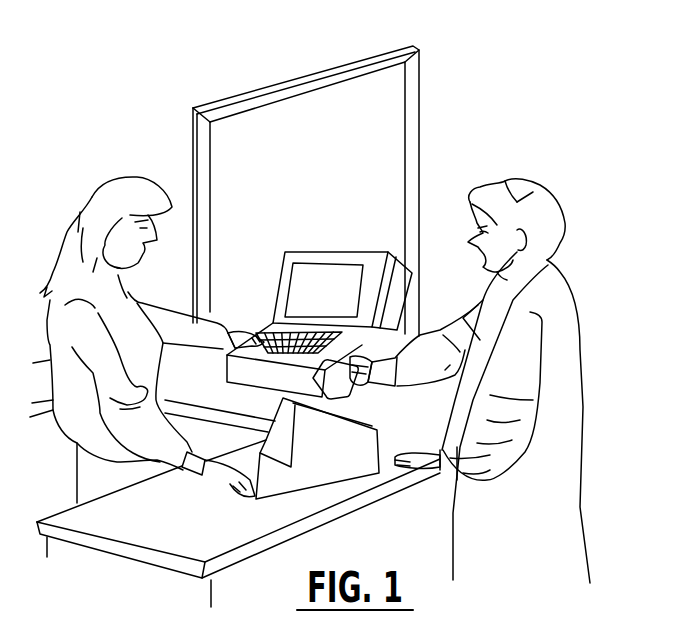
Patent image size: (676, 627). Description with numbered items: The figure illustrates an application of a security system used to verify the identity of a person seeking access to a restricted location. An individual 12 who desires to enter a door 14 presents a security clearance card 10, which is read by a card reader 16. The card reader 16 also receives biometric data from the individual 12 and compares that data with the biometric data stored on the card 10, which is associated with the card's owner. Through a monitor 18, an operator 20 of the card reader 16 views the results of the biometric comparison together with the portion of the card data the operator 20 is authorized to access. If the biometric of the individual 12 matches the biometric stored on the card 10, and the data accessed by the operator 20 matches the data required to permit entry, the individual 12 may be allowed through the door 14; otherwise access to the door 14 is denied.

The security clearance card 10 is at (353, 393).
The individual 12 is at (565, 345).
The door 14 is at (348, 132).
The card reader 16 is at (360, 445).
The monitor 18 is at (335, 282).
The operator 20 is at (118, 198).